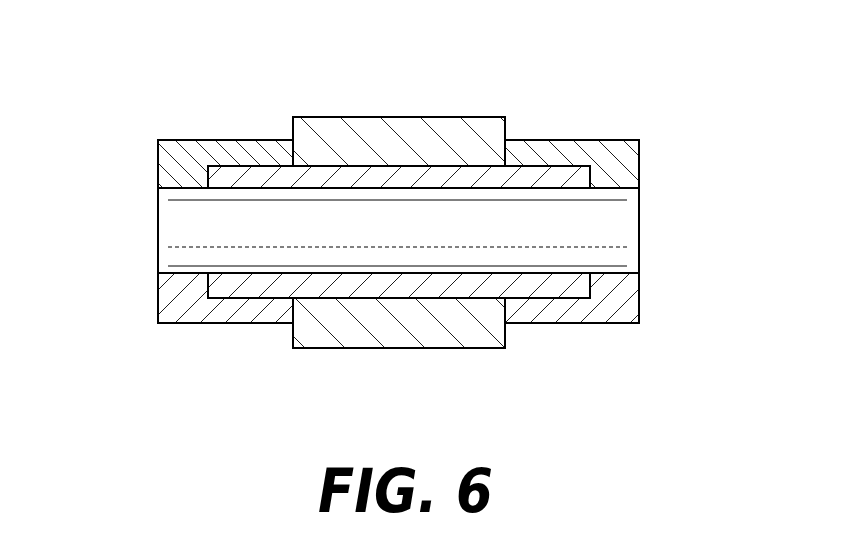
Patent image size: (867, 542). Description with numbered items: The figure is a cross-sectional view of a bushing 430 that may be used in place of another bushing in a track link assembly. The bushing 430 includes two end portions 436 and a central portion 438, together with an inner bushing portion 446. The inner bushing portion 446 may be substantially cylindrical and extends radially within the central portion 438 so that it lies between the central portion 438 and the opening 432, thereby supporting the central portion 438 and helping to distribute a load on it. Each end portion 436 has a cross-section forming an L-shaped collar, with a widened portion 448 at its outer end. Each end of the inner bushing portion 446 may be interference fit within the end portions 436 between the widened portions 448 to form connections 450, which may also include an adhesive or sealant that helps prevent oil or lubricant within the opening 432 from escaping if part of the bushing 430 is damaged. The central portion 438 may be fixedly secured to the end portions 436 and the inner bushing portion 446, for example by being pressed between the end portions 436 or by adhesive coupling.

The bushing 430 is at (672, 98).
The opening 432 is at (621, 226).
The end portions 436 is at (242, 150).
The central portion 438 is at (404, 128).
The inner bushing portion 446 is at (517, 167).
The widened portion 448 is at (170, 164).
The connections 450 is at (223, 168).